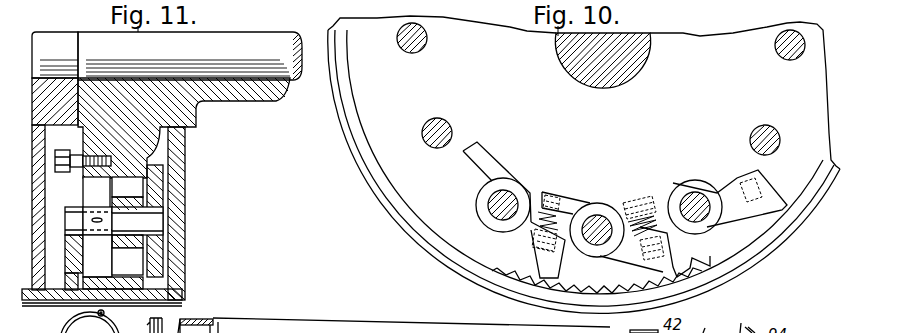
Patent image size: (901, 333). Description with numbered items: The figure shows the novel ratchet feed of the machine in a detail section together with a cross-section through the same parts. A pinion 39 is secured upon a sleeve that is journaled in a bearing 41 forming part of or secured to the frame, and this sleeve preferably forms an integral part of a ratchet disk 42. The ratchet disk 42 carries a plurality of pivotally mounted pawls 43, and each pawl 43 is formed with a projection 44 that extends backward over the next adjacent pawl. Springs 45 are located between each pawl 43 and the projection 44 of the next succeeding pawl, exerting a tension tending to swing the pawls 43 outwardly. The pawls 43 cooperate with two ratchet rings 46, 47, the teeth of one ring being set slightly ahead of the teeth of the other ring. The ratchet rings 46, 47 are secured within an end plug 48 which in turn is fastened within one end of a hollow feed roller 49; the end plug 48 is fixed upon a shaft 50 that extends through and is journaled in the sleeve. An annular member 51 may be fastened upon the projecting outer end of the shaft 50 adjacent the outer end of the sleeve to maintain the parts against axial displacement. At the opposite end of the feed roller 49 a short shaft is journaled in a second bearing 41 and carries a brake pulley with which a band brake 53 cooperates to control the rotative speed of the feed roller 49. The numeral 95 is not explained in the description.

In FIG. 10, the pinion 39 is at (704, 324).
In FIG. 11, the bearing 41 is at (187, 320).
In FIG. 11, the ratchet disk 42 is at (193, 117).
In FIG. 10, the ratchet disk 42 is at (584, 164).
In FIG. 10, the pawl 43 is at (680, 262).
In FIG. 10, the projection 44 is at (590, 196).
In FIG. 10, the spring 45 is at (532, 221).
In FIG. 11, the ratchet ring 46 is at (143, 281).
In FIG. 10, the ratchet ring 46 is at (510, 277).
In FIG. 10, the ratchet ring 47 is at (497, 268).
In FIG. 11, the end plug 48 is at (45, 243).
In FIG. 11, the feed roller 49 is at (48, 303).
In FIG. 11, the shaft 50 is at (167, 56).
In FIG. 10, the annular member 51 is at (737, 319).
In FIG. 11, the band brake 53 is at (144, 322).
In FIG. 10, the spring 95 is at (757, 327).